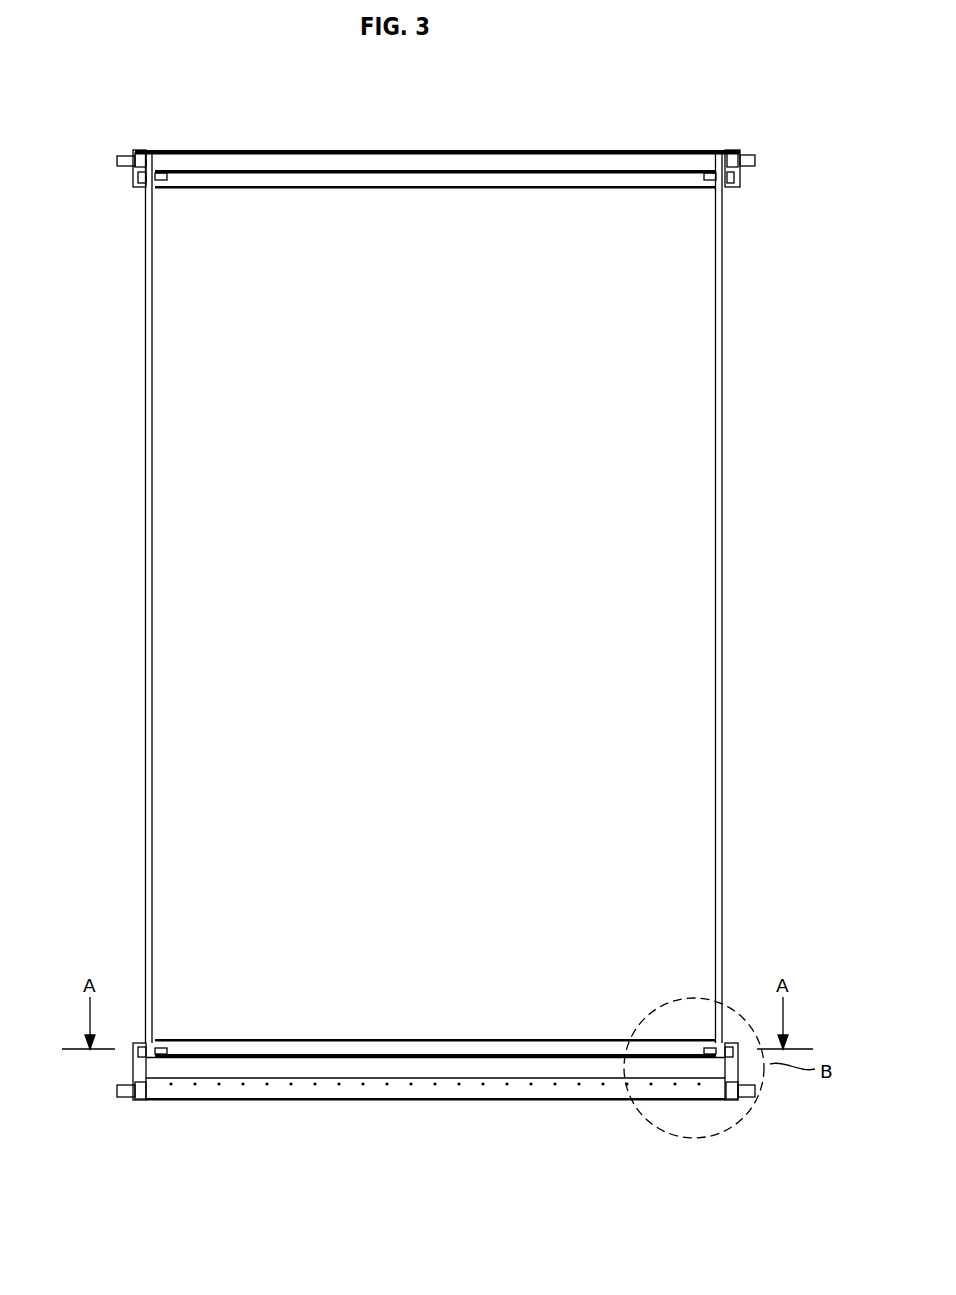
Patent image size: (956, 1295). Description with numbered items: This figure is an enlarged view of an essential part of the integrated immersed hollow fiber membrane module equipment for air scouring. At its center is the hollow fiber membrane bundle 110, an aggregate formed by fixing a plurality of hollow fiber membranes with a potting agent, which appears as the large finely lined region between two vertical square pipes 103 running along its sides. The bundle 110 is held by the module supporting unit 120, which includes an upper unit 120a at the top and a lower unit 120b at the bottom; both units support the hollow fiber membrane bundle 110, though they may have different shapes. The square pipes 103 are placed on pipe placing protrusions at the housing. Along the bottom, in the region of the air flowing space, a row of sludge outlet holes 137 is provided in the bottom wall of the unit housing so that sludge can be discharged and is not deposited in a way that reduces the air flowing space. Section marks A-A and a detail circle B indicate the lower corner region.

The module supporting unit 120 is at (757, 143).
The upper unit 120a is at (127, 178).
The lower unit 120b is at (130, 1107).
The square pipe 103 is at (145, 421).
The hollow fiber membrane bundle 110 is at (692, 570).
The sludge outlet hole 137 is at (160, 1102).